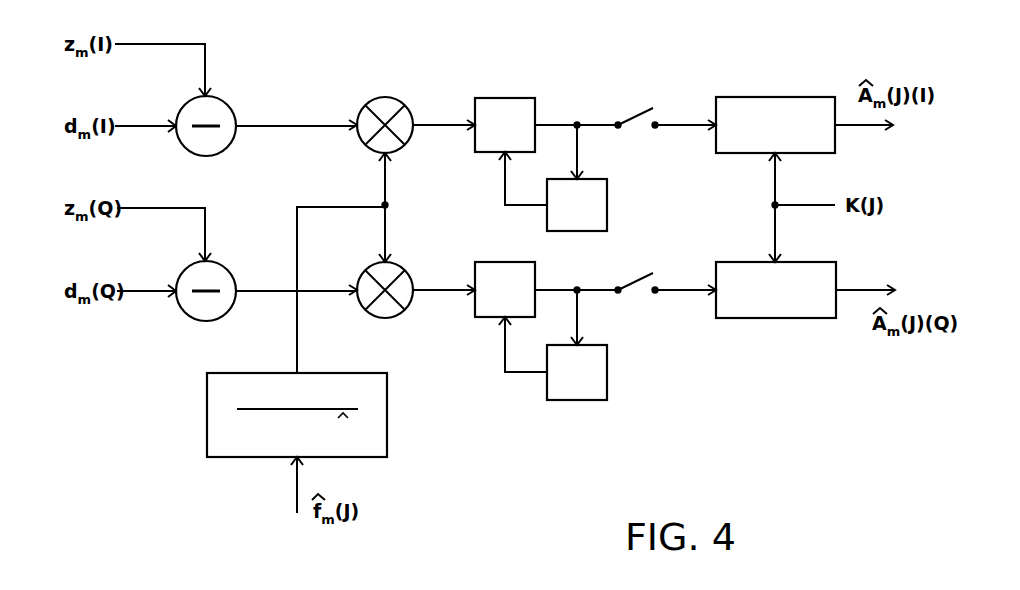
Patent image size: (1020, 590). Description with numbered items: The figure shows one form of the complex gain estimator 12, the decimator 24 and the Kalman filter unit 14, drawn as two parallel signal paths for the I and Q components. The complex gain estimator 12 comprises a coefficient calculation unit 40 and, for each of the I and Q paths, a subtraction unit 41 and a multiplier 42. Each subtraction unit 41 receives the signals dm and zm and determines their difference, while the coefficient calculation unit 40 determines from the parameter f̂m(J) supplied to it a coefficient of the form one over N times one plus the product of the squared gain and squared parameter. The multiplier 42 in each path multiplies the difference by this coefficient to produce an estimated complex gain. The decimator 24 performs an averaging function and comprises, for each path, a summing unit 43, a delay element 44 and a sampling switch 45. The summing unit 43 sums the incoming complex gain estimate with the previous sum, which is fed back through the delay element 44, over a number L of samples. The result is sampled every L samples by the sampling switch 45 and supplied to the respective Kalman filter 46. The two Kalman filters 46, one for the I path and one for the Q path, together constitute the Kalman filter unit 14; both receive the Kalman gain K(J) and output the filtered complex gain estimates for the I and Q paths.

The complex gain estimator 12 is at (264, 221).
The decimator 24 is at (488, 219).
The Kalman filter unit 14 is at (745, 217).
The coefficient calculation unit 40 is at (215, 415).
The subtraction unit 41 is at (218, 106).
The multiplier 42 is at (370, 106).
The summing unit 43 is at (484, 100).
The delay element 44 is at (603, 195).
The sampling switch 45 is at (637, 110).
The Kalman filter 46 is at (724, 100).